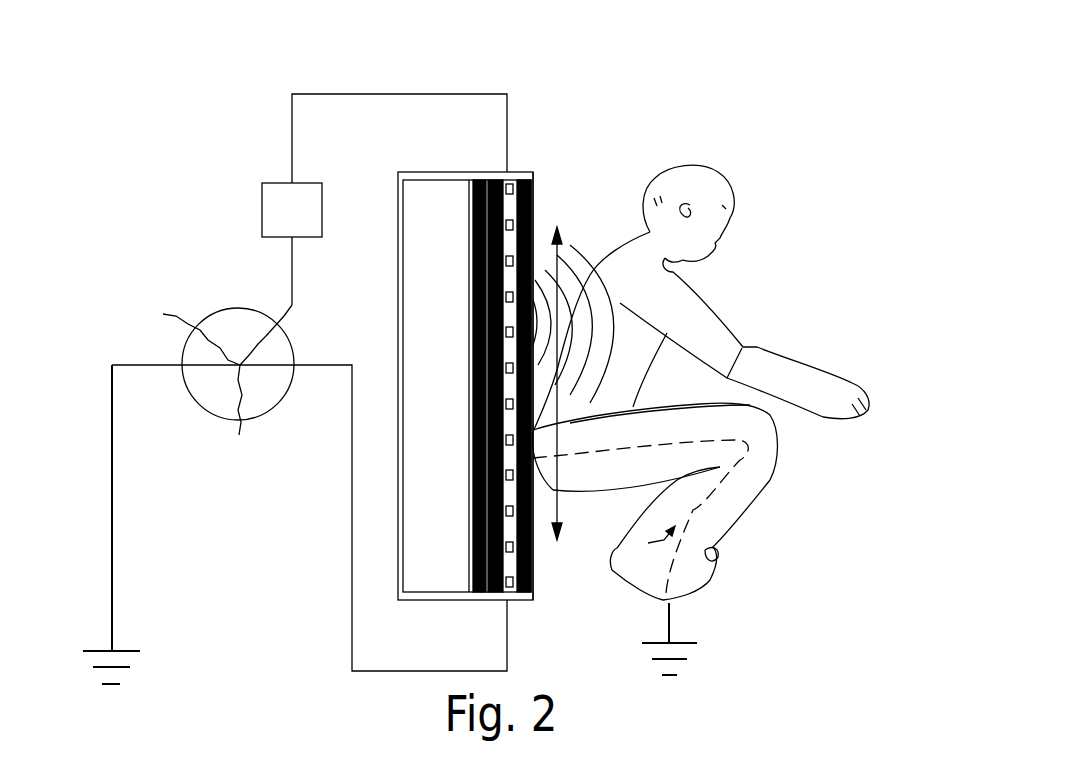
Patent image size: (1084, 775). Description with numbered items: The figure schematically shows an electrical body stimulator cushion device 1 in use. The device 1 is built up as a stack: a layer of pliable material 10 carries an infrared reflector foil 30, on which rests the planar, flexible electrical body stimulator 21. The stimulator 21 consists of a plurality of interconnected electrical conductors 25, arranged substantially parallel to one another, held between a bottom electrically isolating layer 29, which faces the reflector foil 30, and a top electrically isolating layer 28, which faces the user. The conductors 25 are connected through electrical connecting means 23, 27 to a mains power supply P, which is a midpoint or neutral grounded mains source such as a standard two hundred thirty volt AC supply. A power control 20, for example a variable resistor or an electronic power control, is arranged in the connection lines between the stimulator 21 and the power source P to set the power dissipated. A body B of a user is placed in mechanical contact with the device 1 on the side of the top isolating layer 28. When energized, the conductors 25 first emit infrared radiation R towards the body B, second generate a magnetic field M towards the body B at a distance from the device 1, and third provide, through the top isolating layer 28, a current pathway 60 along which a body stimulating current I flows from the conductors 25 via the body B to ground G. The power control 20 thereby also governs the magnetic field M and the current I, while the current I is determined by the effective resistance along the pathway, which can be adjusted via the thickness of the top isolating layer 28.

The electrical body stimulator cushion device 1 is at (374, 184).
The layer of pliable material 10 is at (408, 329).
The power control 20 is at (283, 190).
The electrical body stimulator 21 is at (516, 245).
The electrical connecting means 23 is at (506, 178).
The electrical conductors 25 is at (533, 178).
The electrical connecting means 27 is at (507, 600).
The top electrically isolating layer 28 is at (522, 593).
The bottom electrically isolating layer 29 is at (490, 178).
The infrared reflector foil 30 is at (480, 593).
The current pathway 60 is at (707, 490).
The mains power supply P is at (228, 310).
The ground G is at (123, 650).
The infrared radiation R is at (588, 246).
The body B is at (671, 302).
The magnetic field M is at (555, 507).
The body stimulating current I is at (656, 543).